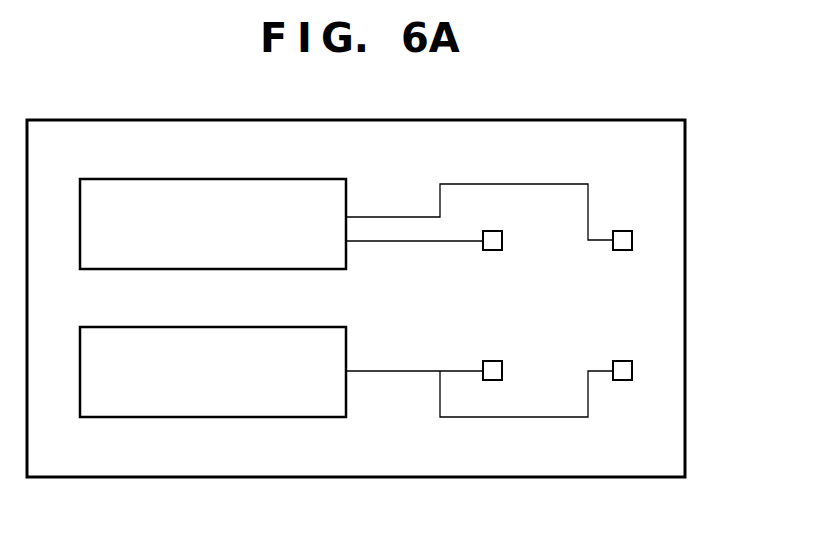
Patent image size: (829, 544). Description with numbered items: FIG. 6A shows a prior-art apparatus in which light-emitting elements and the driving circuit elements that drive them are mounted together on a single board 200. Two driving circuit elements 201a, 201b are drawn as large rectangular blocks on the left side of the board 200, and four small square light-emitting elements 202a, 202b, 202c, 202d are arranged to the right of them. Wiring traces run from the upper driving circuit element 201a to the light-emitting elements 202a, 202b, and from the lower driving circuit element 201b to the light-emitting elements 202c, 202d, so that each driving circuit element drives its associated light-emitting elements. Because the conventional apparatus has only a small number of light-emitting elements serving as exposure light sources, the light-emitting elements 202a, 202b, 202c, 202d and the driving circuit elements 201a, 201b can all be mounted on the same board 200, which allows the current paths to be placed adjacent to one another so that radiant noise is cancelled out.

The board 200 is at (653, 118).
The driving circuit element 201a is at (323, 178).
The driving circuit element 201b is at (323, 326).
The light-emitting element 202a is at (492, 250).
The light-emitting element 202b is at (622, 250).
The light-emitting element 202c is at (492, 361).
The light-emitting element 202d is at (623, 361).